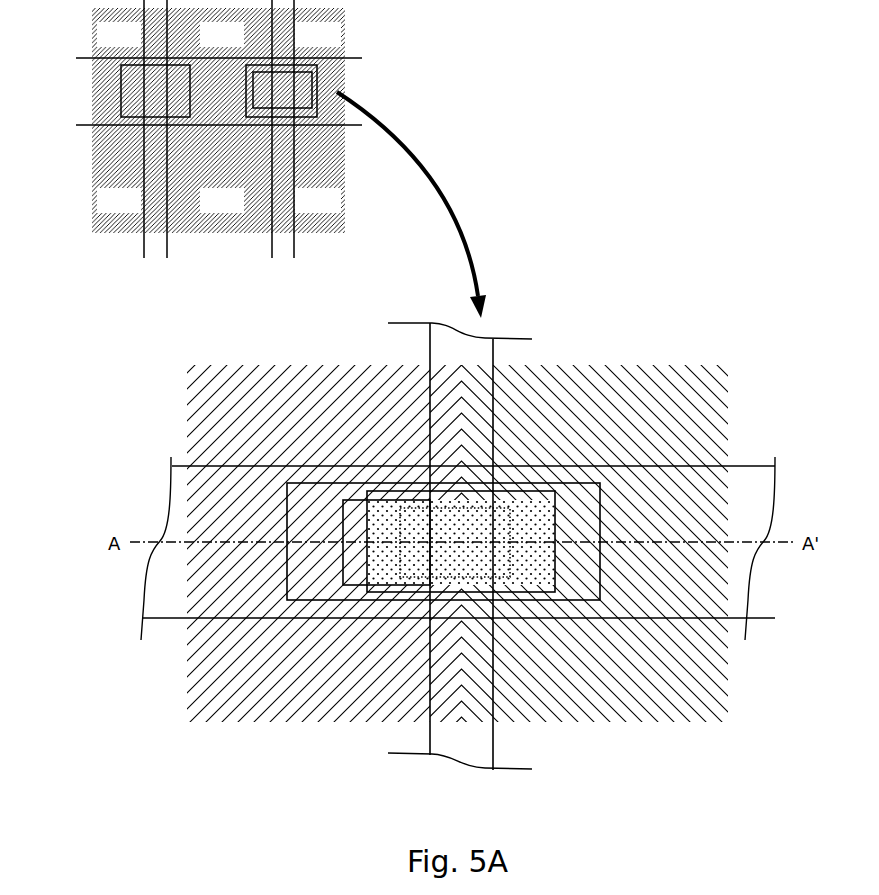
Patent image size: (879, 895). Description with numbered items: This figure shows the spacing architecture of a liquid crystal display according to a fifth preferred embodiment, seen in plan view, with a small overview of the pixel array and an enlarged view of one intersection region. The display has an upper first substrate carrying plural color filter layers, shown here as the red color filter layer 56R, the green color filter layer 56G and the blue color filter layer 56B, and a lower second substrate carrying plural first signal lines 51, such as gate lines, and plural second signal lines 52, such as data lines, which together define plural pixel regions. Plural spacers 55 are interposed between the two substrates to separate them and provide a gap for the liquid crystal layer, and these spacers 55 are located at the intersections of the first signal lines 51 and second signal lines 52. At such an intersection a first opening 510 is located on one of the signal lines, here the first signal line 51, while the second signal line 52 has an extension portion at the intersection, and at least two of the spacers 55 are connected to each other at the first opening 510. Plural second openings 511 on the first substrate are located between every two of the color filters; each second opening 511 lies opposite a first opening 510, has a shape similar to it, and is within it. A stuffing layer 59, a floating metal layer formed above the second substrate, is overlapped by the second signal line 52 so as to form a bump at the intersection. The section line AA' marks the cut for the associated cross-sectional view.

The first signal line 51 is at (82, 83).
The second signal line 52 is at (155, 250).
The spacer 55 is at (305, 90).
The green color filter layer 56G is at (218, 120).
The blue color filter layer 56B is at (340, 372).
The red color filter layer 56R is at (511, 372).
The stuffing layer 59 is at (514, 582).
The first opening 510 is at (390, 585).
The second opening 511 is at (372, 567).